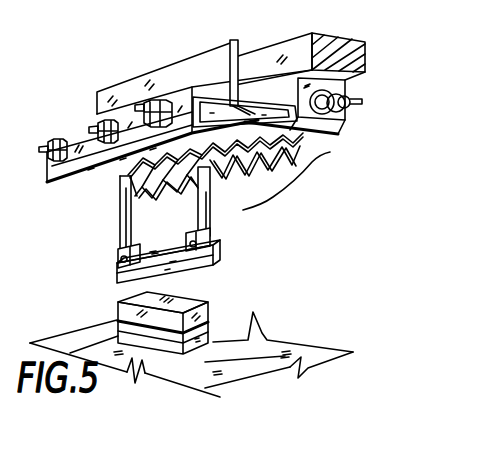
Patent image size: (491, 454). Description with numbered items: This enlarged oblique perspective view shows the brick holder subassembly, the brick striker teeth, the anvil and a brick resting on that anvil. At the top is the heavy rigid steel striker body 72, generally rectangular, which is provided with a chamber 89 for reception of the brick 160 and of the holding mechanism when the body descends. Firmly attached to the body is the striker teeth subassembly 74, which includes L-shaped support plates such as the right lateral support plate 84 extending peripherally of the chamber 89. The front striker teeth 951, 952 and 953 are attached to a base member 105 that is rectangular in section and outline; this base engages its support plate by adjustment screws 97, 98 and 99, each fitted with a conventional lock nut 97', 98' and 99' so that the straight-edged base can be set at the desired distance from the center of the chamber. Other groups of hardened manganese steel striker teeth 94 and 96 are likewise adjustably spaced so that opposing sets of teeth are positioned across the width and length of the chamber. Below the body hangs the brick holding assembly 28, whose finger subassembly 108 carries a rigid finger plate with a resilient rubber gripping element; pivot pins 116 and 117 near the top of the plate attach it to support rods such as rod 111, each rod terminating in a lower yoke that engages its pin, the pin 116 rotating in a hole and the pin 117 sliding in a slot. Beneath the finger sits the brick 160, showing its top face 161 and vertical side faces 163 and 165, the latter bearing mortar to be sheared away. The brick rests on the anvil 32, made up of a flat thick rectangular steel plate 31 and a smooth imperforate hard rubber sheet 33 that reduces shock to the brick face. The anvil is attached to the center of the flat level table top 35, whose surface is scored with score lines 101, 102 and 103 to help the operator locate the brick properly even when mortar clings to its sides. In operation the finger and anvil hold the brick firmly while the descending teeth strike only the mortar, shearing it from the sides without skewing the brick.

The striker body 72 is at (324, 32).
The chamber 89 is at (245, 56).
The right lateral striker teeth unit support plate 84 is at (333, 123).
The adjustment screw 97 is at (65, 113).
The lock nut 97' is at (83, 101).
The adjustment screw 98 is at (119, 79).
The lock nut 98' is at (143, 82).
The adjustment screw 99 is at (178, 63).
The lock nut 99' is at (202, 70).
The base member 105 is at (215, 100).
The striker teeth 94 is at (320, 152).
The striker teeth 96 is at (221, 180).
The striker teeth subassembly 74 is at (288, 181).
The front striker tooth 951 is at (120, 172).
The front striker tooth 952 is at (127, 190).
The front striker tooth 953 is at (151, 203).
The support rod 111 is at (212, 209).
The pivot pin 117 is at (210, 241).
The pivot pin 116 is at (118, 260).
The finger subassembly 108 is at (116, 279).
The brick holding assembly 28 is at (70, 262).
The brick side face 165 is at (119, 310).
The top face of brick 161 is at (187, 300).
The brick side face 163 is at (232, 341).
The brick 160 is at (221, 304).
The table top 35 is at (50, 343).
The steel plate 31 is at (104, 339).
The anvil 32 is at (139, 380).
The hard rubber sheet 33 is at (138, 328).
The score line 101 is at (255, 370).
The score line 102 is at (284, 367).
The score line 103 is at (283, 332).